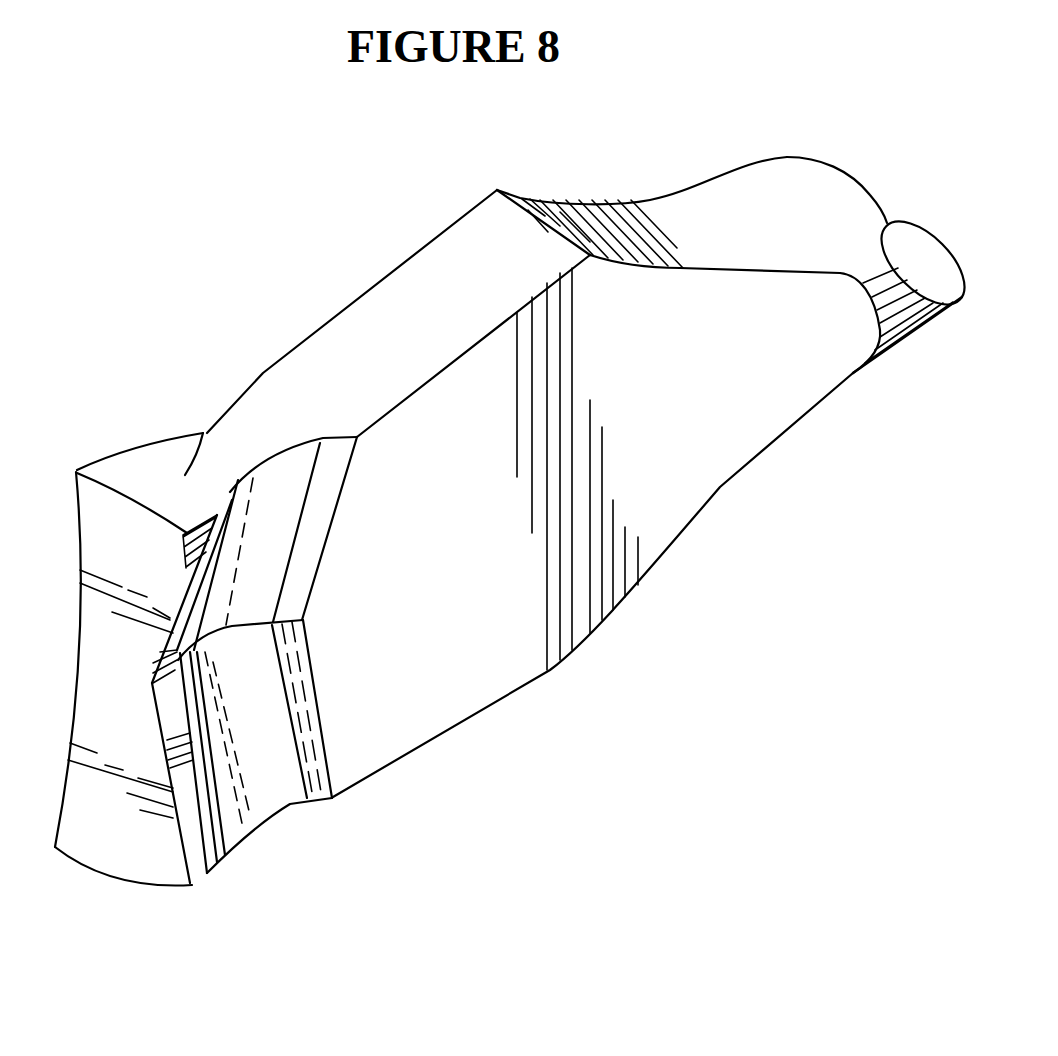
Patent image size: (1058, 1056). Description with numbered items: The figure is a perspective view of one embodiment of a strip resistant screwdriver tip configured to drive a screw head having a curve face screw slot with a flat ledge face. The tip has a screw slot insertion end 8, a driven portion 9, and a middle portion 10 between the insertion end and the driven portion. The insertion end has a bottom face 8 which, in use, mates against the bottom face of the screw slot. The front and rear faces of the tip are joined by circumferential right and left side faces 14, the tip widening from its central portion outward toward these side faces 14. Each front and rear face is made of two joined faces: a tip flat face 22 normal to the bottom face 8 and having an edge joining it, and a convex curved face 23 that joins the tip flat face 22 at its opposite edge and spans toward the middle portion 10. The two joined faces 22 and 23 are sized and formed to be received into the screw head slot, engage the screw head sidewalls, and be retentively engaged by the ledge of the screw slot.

The screw slot insertion end 8 is at (120, 685).
The driven portion 9 is at (788, 353).
The middle portion 10 is at (418, 668).
The circumferential side faces 14 is at (203, 433).
The tip flat face 22 is at (182, 603).
The convex curved face 23 is at (320, 505).